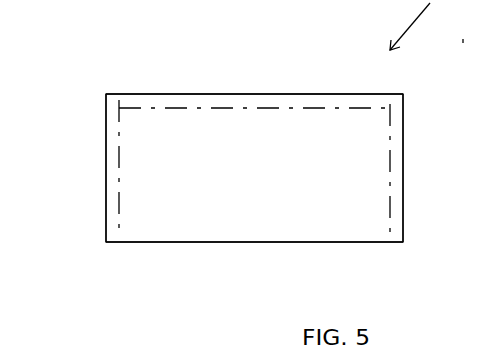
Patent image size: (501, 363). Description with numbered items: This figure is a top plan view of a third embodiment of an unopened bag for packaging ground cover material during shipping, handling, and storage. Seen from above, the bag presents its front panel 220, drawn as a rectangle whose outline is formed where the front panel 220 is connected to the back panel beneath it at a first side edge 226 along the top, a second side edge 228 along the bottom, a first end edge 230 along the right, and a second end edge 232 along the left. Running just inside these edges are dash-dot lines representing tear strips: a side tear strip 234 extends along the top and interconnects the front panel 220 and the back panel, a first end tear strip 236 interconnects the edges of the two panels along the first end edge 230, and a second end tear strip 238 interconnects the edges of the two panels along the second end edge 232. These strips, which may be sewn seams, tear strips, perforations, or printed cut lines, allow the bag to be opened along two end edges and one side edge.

The front panel 220 is at (280, 177).
The first side edge 226 is at (172, 93).
The second side edge 228 is at (167, 243).
The first end edge 230 is at (404, 142).
The second end edge 232 is at (105, 133).
The side tear strip 234 is at (296, 102).
The first end tear strip 236 is at (397, 198).
The second end tear strip 238 is at (117, 190).